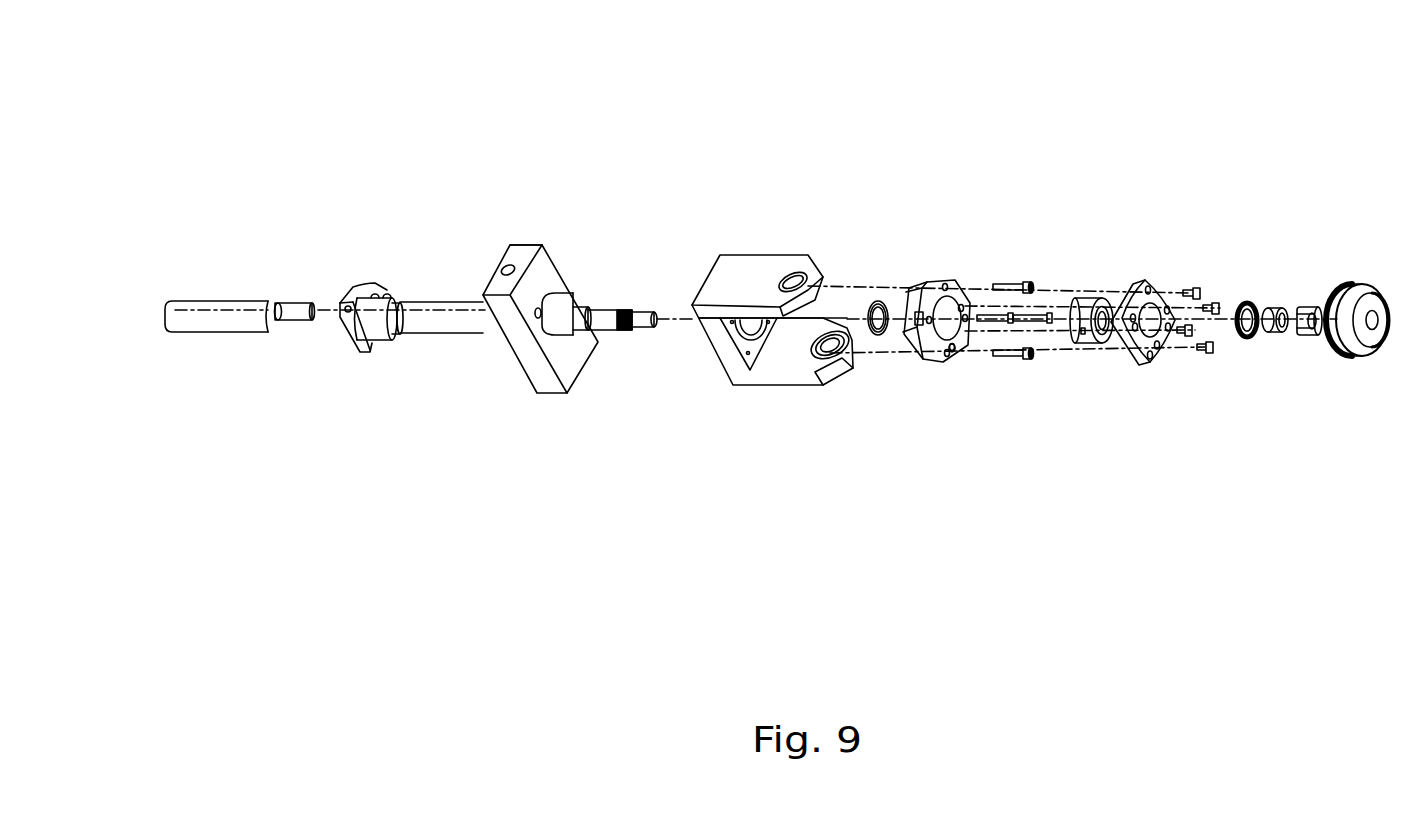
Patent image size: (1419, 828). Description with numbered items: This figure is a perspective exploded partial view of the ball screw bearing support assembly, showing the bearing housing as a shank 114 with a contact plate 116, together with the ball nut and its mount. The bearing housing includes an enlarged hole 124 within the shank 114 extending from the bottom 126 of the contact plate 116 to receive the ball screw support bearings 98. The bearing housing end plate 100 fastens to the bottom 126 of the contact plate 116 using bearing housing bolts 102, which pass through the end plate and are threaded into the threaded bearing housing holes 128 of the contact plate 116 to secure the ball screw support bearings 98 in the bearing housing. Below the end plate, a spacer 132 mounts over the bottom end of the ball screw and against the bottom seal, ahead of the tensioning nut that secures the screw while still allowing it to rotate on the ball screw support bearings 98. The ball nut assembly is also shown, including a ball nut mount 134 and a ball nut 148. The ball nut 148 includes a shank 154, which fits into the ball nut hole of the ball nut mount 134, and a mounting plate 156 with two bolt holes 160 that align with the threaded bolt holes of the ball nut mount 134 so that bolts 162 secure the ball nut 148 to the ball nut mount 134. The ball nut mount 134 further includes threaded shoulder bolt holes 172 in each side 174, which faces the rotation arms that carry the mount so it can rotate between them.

The ball screw support bearings 98 is at (1082, 345).
The bearing housing end plate 100 is at (1148, 360).
The bearing housing bolts 102 is at (1207, 353).
The shank 114 is at (917, 297).
The contact plate 116 is at (938, 285).
The enlarged hole 124 is at (955, 350).
The bottom 126 is at (955, 292).
The threaded bearing housing holes 128 is at (963, 285).
The spacer 132 is at (1275, 308).
The ball nut mount 134 is at (542, 243).
The ball nut 148 is at (390, 235).
The shank 154 is at (398, 345).
The mounting plate 156 is at (357, 357).
The bolt holes 160 is at (350, 307).
The bolts 162 is at (277, 307).
The threaded shoulder bolt holes 172 is at (522, 258).
The side 174 is at (518, 250).